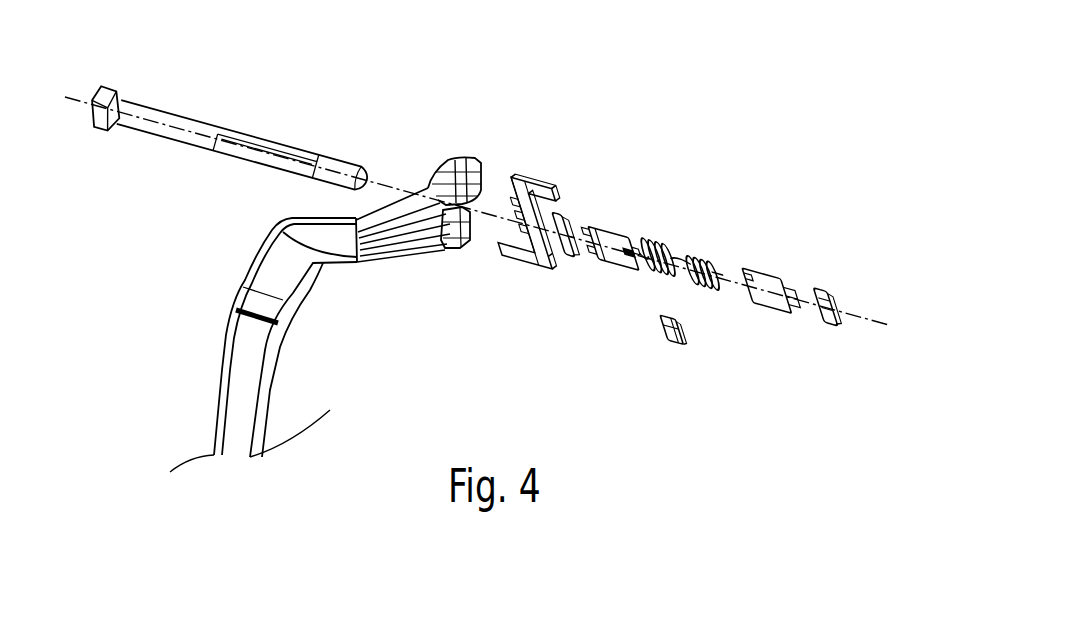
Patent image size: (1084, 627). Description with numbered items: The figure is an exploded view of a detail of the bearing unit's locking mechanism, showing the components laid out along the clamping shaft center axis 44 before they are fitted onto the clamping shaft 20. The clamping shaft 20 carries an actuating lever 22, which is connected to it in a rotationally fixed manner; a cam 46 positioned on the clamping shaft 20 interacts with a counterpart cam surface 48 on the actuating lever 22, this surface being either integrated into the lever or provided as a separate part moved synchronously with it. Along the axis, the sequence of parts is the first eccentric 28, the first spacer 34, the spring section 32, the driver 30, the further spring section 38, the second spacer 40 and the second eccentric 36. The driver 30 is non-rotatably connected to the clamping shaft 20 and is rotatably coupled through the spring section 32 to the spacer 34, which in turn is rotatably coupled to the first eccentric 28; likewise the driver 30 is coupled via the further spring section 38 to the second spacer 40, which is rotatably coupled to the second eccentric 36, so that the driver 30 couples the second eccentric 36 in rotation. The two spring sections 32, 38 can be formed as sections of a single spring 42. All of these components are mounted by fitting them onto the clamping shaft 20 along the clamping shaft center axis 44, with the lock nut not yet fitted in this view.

The clamping shaft 20 is at (274, 157).
The actuating lever 22 is at (240, 360).
The first eccentric 28 is at (577, 200).
The driver 30 is at (666, 346).
The spring section 32 is at (671, 237).
The spacer 34 is at (634, 226).
The second eccentric 36 is at (838, 284).
The further spring section 38 is at (709, 250).
The second spacer 40 is at (771, 267).
The spring 42 is at (731, 212).
The clamping shaft center axis 44 is at (72, 97).
The cam 46 is at (550, 169).
The counterpart cam surface 48 is at (494, 176).